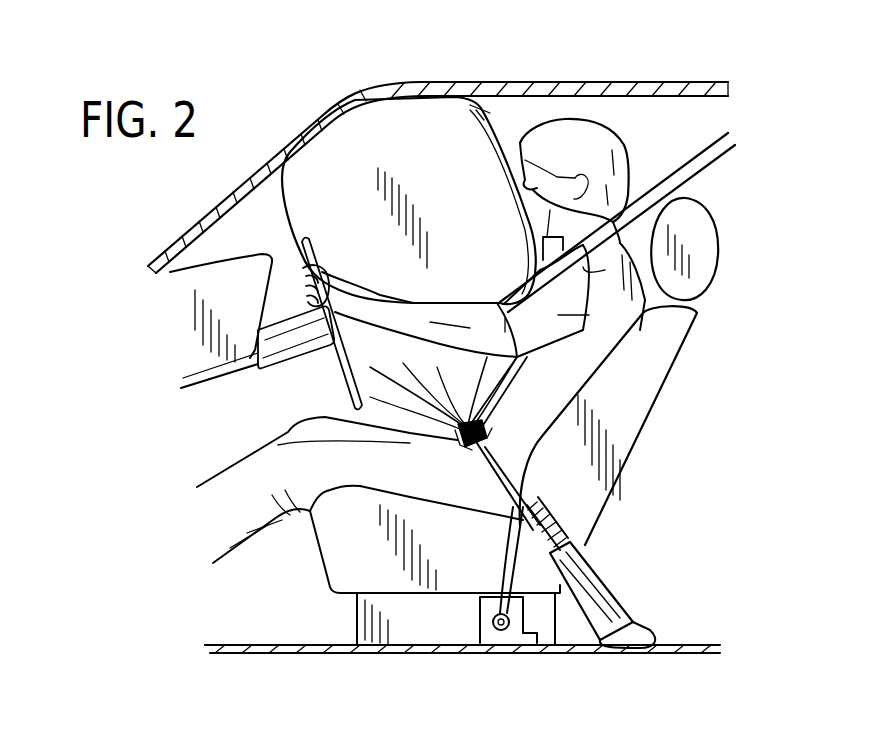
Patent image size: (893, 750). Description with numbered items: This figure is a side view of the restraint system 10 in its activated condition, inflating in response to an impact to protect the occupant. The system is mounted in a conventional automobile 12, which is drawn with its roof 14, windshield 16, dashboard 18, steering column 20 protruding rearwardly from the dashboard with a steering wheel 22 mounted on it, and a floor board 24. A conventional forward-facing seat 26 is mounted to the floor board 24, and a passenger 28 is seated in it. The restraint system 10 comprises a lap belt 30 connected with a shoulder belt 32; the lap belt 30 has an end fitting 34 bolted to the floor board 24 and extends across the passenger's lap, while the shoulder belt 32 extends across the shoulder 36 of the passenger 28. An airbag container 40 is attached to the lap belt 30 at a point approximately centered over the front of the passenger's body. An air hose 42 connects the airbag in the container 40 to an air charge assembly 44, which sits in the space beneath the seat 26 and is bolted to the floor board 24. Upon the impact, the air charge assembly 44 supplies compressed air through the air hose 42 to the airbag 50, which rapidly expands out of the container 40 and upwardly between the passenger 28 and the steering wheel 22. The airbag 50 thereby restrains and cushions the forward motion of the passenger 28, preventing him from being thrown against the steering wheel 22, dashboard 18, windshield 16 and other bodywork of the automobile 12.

The restraint system 10 is at (458, 457).
The automobile 12 is at (556, 72).
The roof 14 is at (567, 81).
The windshield 16 is at (240, 190).
The dashboard 18 is at (232, 263).
The steering column 20 is at (224, 372).
The steering wheel 22 is at (330, 360).
The floor board 24 is at (273, 643).
The seat 26 is at (643, 400).
The passenger 28 is at (421, 341).
The lap belt 30 is at (563, 533).
The shoulder belt 32 is at (700, 160).
The end fitting 34 is at (627, 627).
The shoulder 36 is at (605, 270).
The airbag container 40 is at (490, 425).
The air hose 42 is at (533, 505).
The air charge assembly 44 is at (478, 620).
The airbag 50 is at (484, 113).